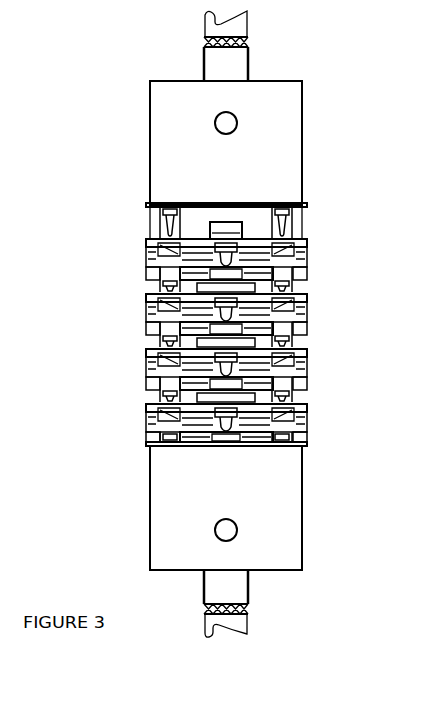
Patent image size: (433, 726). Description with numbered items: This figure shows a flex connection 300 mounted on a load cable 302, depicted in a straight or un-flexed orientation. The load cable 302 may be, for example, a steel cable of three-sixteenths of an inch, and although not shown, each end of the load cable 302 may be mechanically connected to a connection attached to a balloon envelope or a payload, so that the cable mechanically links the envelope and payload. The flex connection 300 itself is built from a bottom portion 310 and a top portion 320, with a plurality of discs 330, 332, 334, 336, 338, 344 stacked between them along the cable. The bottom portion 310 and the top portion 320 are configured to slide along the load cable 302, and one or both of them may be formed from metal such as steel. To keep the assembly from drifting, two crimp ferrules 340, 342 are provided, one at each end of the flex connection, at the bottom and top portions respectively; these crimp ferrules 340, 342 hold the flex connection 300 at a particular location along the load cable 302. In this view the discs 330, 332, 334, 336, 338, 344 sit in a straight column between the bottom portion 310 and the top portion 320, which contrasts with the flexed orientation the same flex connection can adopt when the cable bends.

The flex connection 300 is at (150, 150).
The load cable 302 is at (205, 25).
The bottom portion 310 is at (150, 467).
The top portion 320 is at (150, 104).
The disc 330 is at (197, 432).
The disc 332 is at (197, 413).
The disc 334 is at (197, 386).
The disc 336 is at (197, 359).
The disc 338 is at (197, 329).
The crimp ferrule 340 is at (197, 448).
The crimp ferrule 342 is at (205, 43).
The disc 344 is at (146, 243).